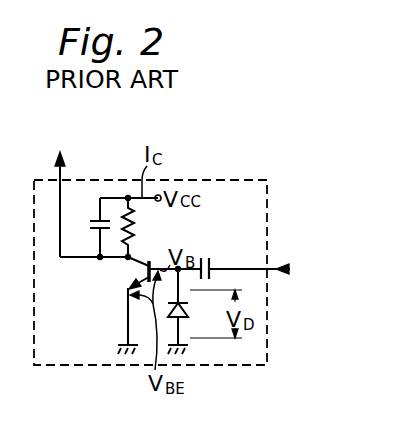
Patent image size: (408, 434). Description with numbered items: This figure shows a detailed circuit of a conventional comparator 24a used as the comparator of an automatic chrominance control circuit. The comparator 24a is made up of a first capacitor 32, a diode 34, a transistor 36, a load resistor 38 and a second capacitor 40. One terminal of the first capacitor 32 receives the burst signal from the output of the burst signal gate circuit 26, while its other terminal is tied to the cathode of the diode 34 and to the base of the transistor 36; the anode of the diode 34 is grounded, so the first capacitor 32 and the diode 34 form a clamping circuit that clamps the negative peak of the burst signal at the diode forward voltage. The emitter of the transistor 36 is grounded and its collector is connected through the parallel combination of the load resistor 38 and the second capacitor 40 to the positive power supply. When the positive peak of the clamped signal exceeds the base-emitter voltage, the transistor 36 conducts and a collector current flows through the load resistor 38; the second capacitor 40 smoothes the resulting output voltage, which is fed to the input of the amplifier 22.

The amplifier 22 is at (68, 182).
The conventional comparator 24a is at (196, 177).
The burst signal gate circuit 26 is at (334, 268).
The first capacitor 32 is at (207, 253).
The diode 34 is at (188, 309).
The transistor 36 is at (130, 270).
The load resistor 38 is at (133, 232).
The second capacitor 40 is at (94, 223).